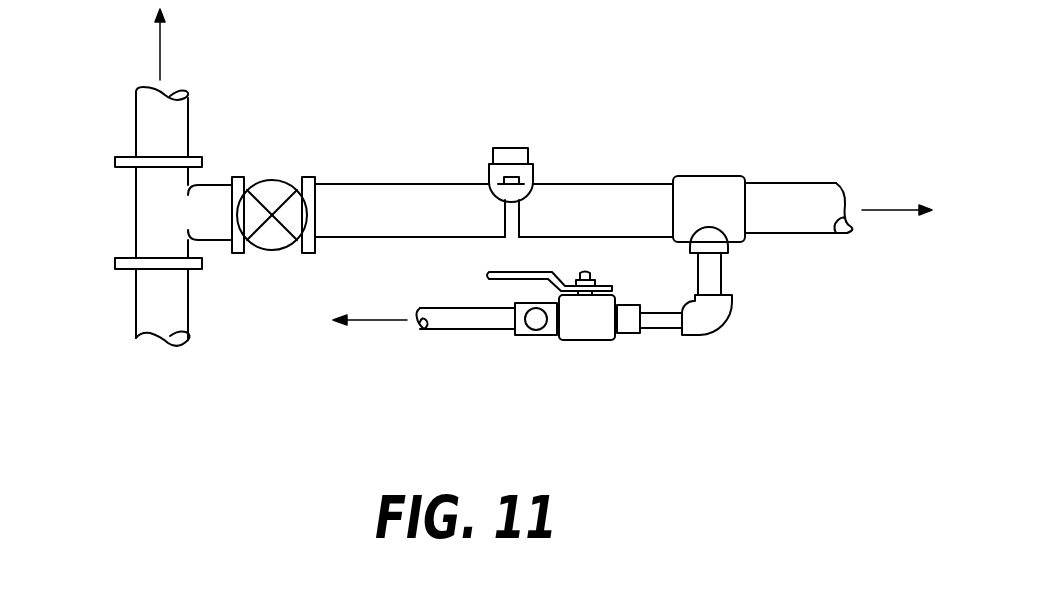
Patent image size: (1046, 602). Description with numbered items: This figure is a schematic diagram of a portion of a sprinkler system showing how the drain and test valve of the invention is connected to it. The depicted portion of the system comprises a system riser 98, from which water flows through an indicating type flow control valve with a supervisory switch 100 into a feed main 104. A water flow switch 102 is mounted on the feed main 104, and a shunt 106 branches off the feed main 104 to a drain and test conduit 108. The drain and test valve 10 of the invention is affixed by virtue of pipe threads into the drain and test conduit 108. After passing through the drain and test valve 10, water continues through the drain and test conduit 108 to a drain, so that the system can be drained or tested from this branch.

The system riser 98 is at (137, 213).
The indicating type flow control valve with a supervisory switch 100 is at (272, 180).
The water flow switch 102 is at (507, 148).
The feed main 104 is at (613, 183).
The shunt 106 is at (728, 245).
The drain and test conduit 108 is at (645, 330).
The drain and test valve 10 is at (576, 340).